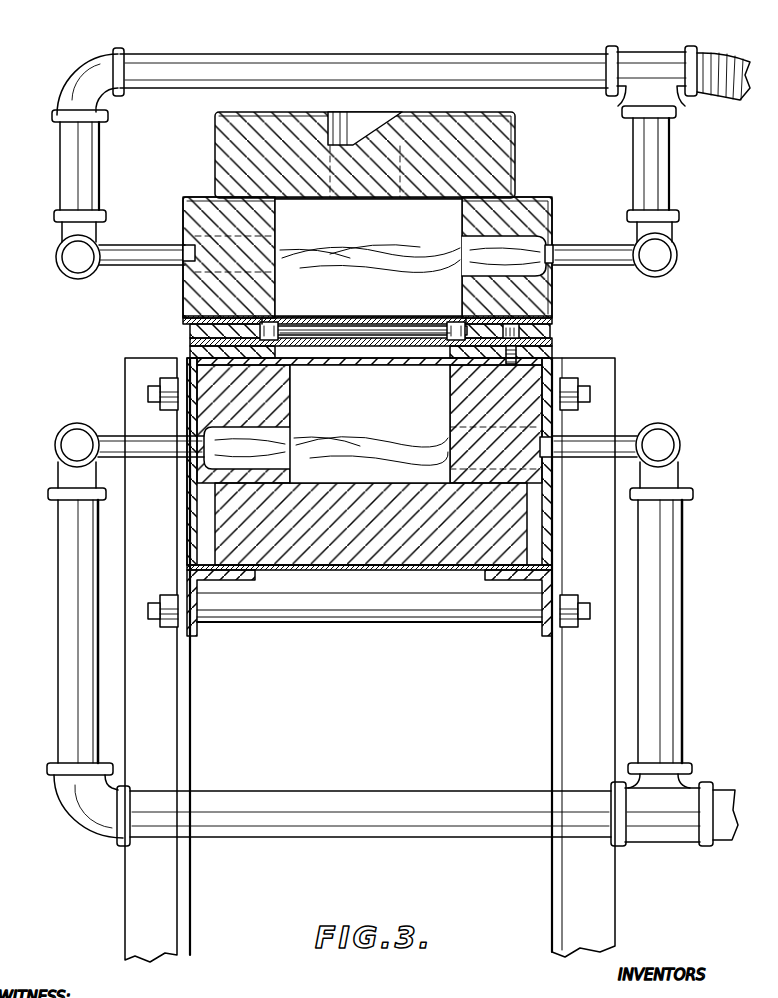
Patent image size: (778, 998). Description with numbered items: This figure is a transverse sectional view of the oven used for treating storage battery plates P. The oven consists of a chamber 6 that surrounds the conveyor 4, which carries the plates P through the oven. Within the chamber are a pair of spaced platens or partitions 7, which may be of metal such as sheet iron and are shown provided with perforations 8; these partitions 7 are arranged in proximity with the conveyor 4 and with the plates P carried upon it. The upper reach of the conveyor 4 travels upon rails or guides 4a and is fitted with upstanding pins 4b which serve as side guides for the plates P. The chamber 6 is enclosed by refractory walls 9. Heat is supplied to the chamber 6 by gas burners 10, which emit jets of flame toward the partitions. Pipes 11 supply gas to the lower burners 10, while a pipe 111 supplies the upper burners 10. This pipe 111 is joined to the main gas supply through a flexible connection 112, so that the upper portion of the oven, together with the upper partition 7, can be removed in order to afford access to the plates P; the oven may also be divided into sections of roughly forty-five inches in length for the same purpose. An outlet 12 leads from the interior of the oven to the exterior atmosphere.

The conveyor 4 is at (183, 322).
The rails or guides 4a is at (190, 342).
The upstanding pins 4b is at (272, 318).
The chamber 6 is at (323, 411).
The platens or partitions 7 is at (362, 317).
The perforations 8 is at (292, 316).
The refractory walls 9 is at (496, 152).
The gas burners 10 is at (135, 255).
The pipes 11 is at (62, 668).
The outlet 12 is at (344, 112).
The pipe 111 is at (463, 66).
The flexible connection 112 is at (725, 62).
The storage battery plates P is at (402, 330).